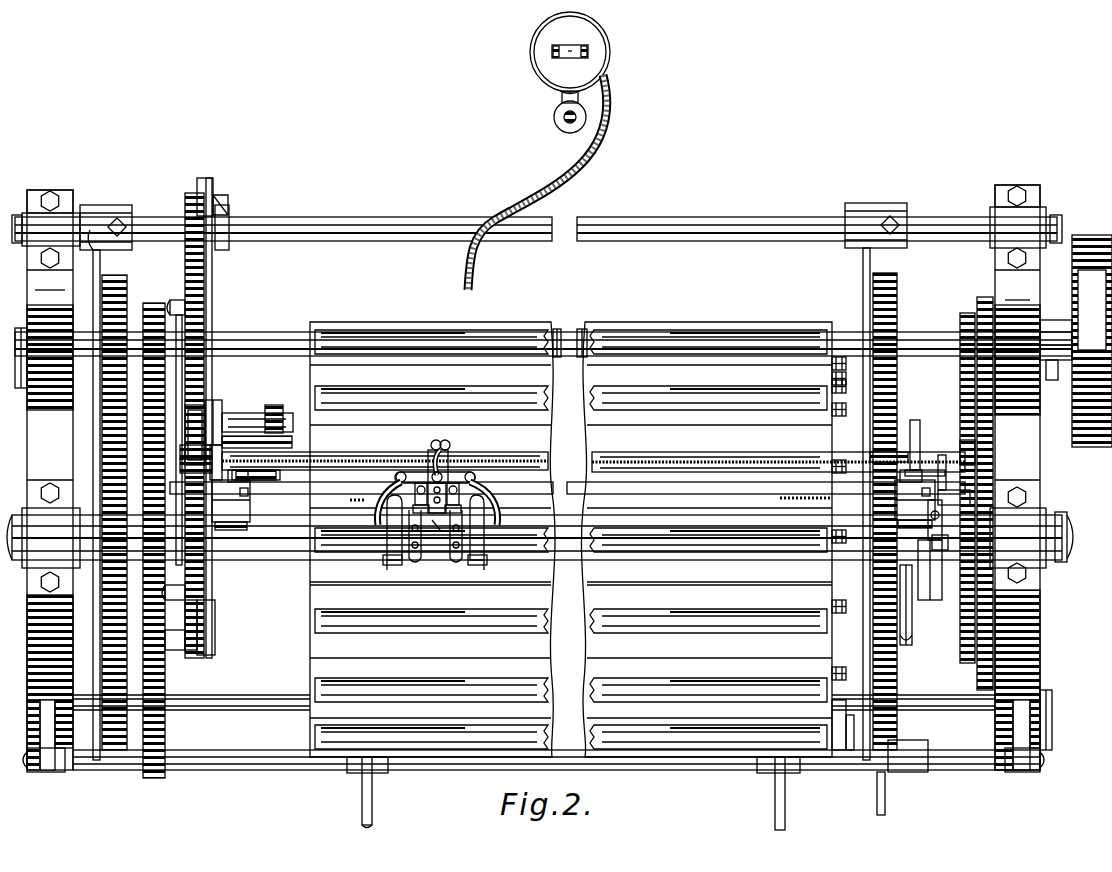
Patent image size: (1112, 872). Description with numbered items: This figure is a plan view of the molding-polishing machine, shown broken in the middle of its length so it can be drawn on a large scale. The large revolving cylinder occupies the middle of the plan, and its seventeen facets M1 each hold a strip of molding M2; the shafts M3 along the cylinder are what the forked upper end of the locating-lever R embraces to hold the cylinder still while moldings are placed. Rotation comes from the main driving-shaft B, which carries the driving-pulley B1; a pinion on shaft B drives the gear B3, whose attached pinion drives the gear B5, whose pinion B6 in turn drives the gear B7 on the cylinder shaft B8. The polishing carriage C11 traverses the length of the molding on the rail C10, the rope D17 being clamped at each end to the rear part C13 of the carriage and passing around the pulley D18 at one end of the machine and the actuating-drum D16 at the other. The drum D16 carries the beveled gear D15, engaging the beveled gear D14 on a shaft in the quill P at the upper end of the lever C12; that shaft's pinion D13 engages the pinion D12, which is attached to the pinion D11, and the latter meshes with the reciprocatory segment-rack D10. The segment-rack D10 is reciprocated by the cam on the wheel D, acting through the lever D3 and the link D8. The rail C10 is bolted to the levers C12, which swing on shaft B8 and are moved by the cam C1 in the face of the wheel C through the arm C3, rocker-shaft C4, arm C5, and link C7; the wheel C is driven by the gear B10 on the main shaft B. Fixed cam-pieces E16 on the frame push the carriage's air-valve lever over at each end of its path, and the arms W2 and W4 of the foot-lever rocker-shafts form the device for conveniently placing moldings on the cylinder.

The cam C1 is at (108, 578).
The arm C3 is at (101, 266).
The rocker-shaft C4 is at (537, 225).
The arm C5 is at (222, 207).
The link C7 is at (210, 327).
The rail C10 is at (345, 493).
The carriage C11 is at (437, 524).
The lever C12 is at (218, 403).
The rear part of the carriage C13 is at (455, 462).
The wheel C is at (912, 425).
The wheel D is at (143, 612).
The lever D3 is at (200, 620).
The link D8 is at (185, 305).
The segment-rack D10 is at (202, 312).
The pinion D11 is at (180, 452).
The pinion D12 is at (180, 467).
The pinion D13 is at (200, 405).
The beveled gear D14 is at (274, 405).
The beveled gear D15 is at (275, 436).
The actuating-drum D16 is at (300, 445).
The rope D17 is at (778, 451).
The pulley D18 is at (902, 448).
The fixed cam-piece E16 is at (270, 575).
The quill P is at (250, 413).
The main driving-shaft B is at (920, 340).
The driving-pulley B1 is at (1076, 341).
The gear B3 is at (980, 485).
The gear B5 is at (962, 360).
The pinion B6 is at (965, 380).
The gear B7 is at (993, 462).
The shaft of the cylinder B8 is at (1058, 535).
The gear B10 is at (130, 282).
The facet M1 is at (545, 735).
The strip of molding M2 is at (678, 768).
The shaft M3 is at (848, 524).
The locating-lever R is at (838, 732).
The arm W2 is at (912, 598).
The arm W4 is at (908, 655).